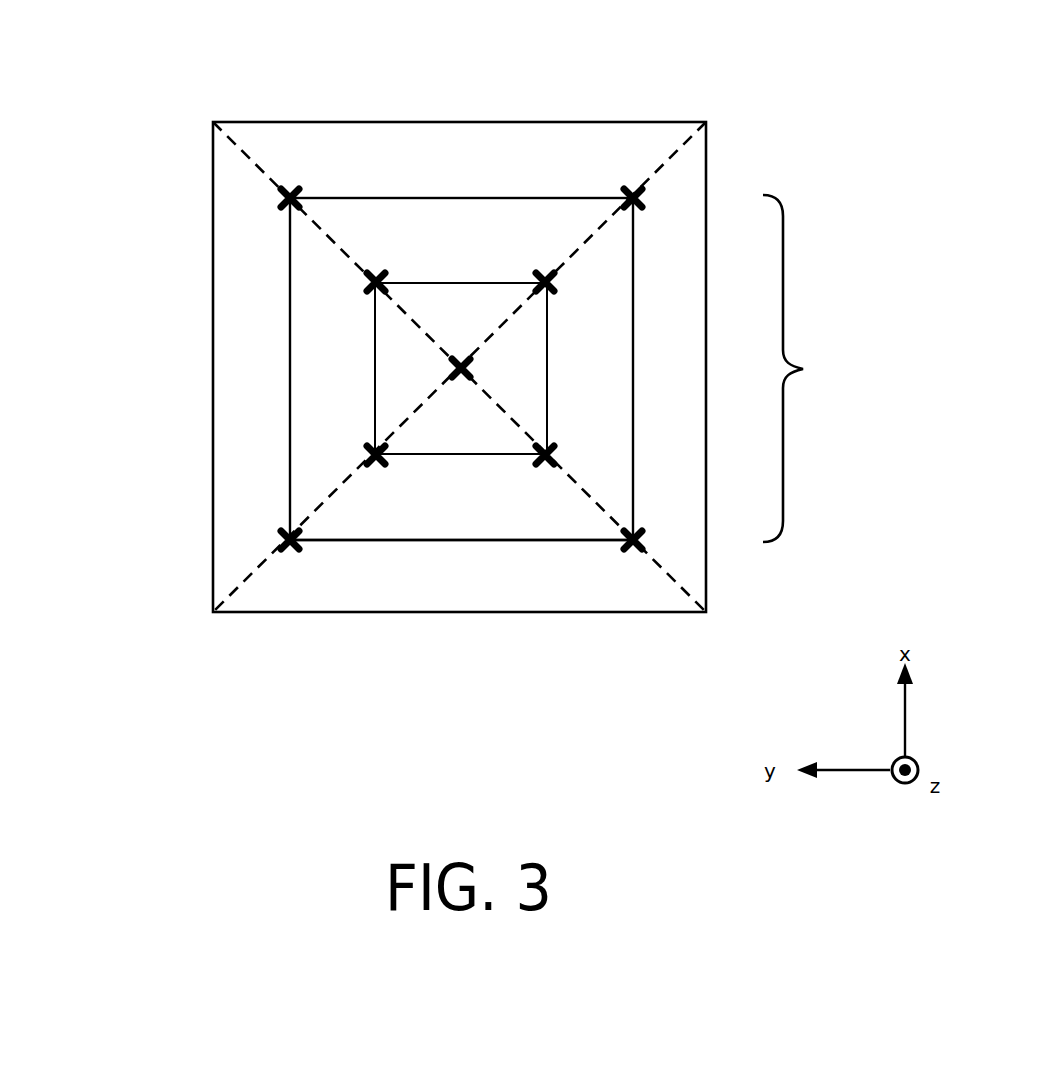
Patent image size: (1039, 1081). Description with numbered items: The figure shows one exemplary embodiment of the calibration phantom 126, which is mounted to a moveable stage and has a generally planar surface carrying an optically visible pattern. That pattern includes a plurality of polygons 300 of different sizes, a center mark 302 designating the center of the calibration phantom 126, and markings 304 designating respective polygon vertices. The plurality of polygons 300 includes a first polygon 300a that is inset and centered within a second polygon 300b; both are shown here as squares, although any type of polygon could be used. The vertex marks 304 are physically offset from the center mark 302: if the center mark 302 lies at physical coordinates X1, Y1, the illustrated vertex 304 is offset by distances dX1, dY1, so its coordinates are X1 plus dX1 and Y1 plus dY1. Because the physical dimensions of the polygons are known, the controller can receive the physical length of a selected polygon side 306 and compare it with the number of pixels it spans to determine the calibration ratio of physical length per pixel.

The calibration phantom 126 is at (155, 62).
The plurality of polygons 300 is at (808, 368).
The first polygon 300a is at (467, 456).
The second polygon 300b is at (367, 543).
The center mark 302 is at (455, 369).
The vertex mark 304 is at (370, 283).
The polygon side 306 is at (479, 197).